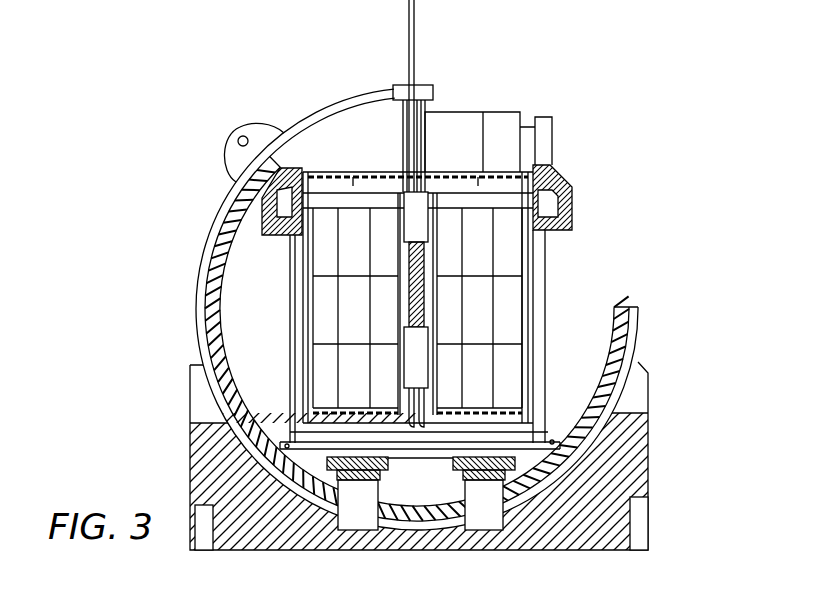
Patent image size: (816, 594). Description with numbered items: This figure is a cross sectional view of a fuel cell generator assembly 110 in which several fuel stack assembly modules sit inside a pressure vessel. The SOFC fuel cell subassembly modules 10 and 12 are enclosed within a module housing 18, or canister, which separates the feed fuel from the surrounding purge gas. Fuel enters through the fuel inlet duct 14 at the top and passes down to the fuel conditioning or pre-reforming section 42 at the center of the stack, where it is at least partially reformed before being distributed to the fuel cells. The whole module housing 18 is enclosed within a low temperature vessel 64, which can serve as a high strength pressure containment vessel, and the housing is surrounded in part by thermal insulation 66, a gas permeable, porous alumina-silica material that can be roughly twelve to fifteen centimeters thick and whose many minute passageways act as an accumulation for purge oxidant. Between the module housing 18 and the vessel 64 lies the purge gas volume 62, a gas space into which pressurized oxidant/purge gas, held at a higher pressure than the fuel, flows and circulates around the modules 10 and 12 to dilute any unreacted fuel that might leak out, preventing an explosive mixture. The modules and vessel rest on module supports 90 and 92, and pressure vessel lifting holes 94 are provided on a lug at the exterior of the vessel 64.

The fuel cell subassembly module 10 is at (336, 172).
The fuel cell subassembly module 12 is at (453, 172).
The fuel inlet duct 14 is at (414, 58).
The module housing 18 is at (542, 277).
The pre-reforming section 42 is at (424, 377).
The purge gas volume 62 is at (375, 150).
The vessel 64 is at (205, 224).
The thermal insulation 66 is at (216, 356).
The module support 90 is at (376, 508).
The module support 92 is at (650, 456).
The pressure vessel lifting hole 94 is at (242, 136).
The assembly 110 is at (612, 89).